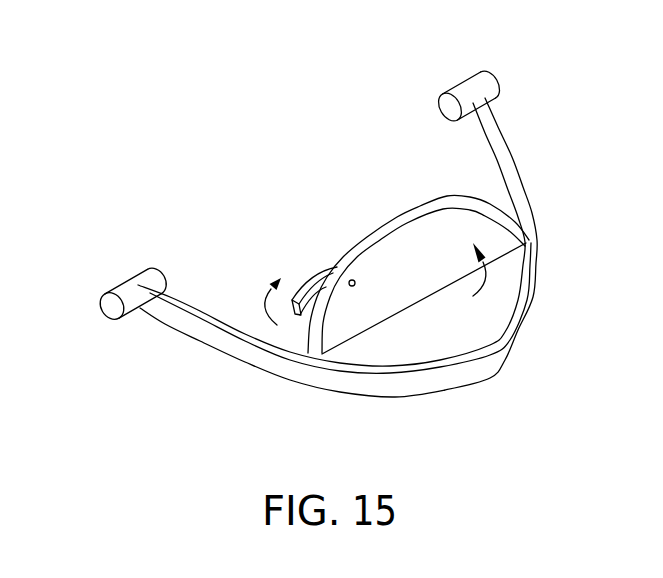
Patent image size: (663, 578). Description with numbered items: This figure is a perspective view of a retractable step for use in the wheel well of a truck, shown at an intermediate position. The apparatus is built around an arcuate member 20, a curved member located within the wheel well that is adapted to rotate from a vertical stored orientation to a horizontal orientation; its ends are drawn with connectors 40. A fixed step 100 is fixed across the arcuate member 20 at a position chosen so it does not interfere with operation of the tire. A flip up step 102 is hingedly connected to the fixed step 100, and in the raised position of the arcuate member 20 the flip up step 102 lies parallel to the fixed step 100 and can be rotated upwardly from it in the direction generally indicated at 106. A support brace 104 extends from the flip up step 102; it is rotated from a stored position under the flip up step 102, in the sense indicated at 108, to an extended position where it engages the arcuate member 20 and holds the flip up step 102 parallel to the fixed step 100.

The arcuate member 20 is at (472, 387).
The strap connector 40 is at (118, 266).
The fixed step 100 is at (473, 330).
The flip up step 102 is at (410, 202).
The support brace 104 is at (317, 270).
The direction of rotation 106 is at (486, 271).
The rotation direction arrow 108 is at (270, 303).